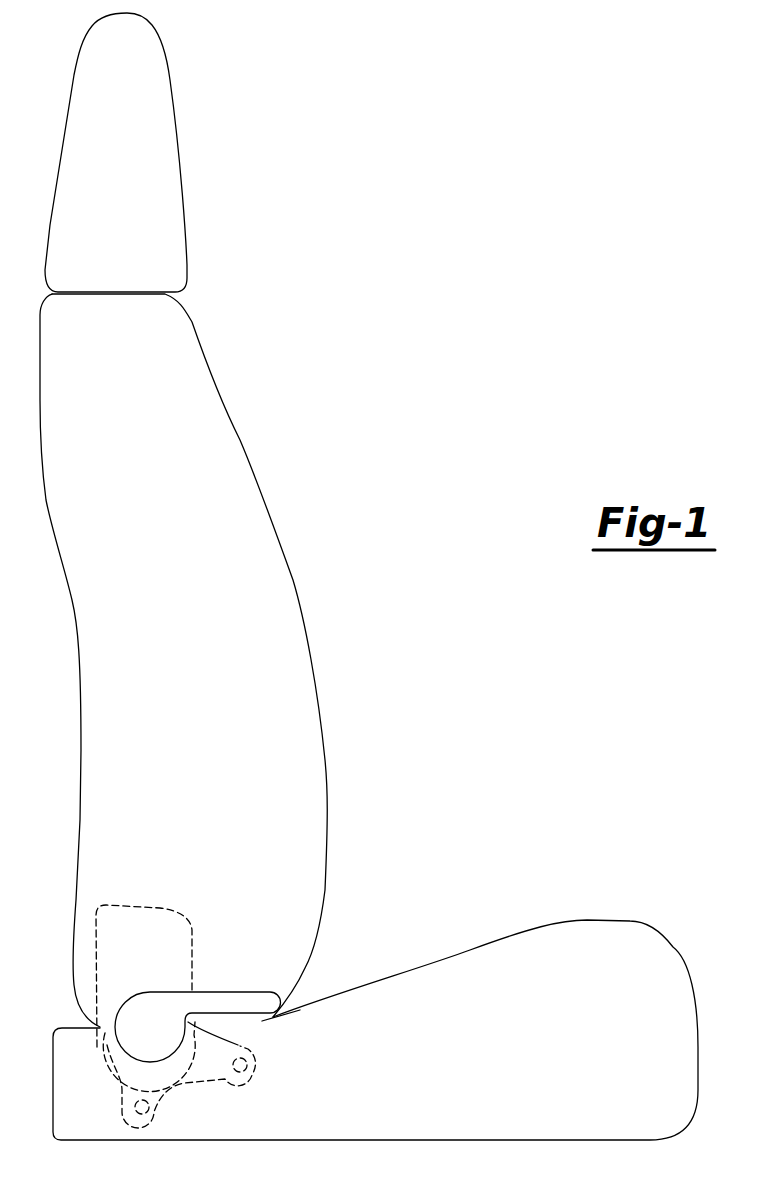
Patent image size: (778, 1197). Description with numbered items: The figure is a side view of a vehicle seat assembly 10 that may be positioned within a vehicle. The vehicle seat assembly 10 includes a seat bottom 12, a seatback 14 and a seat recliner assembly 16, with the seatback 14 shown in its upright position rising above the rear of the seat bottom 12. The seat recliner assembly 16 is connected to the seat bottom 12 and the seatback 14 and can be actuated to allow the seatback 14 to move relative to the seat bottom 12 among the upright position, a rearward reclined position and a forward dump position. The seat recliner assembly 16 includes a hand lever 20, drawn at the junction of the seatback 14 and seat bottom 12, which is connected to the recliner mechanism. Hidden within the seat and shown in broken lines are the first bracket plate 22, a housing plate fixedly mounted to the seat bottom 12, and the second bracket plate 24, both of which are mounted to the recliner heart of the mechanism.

The vehicle seat assembly 10 is at (385, 165).
The seat bottom 12 is at (577, 935).
The seatback 14 is at (268, 570).
The seat recliner assembly 16 is at (226, 952).
The hand lever 20 is at (262, 1003).
The first bracket plate 22 is at (250, 1049).
The second bracket plate 24 is at (129, 905).